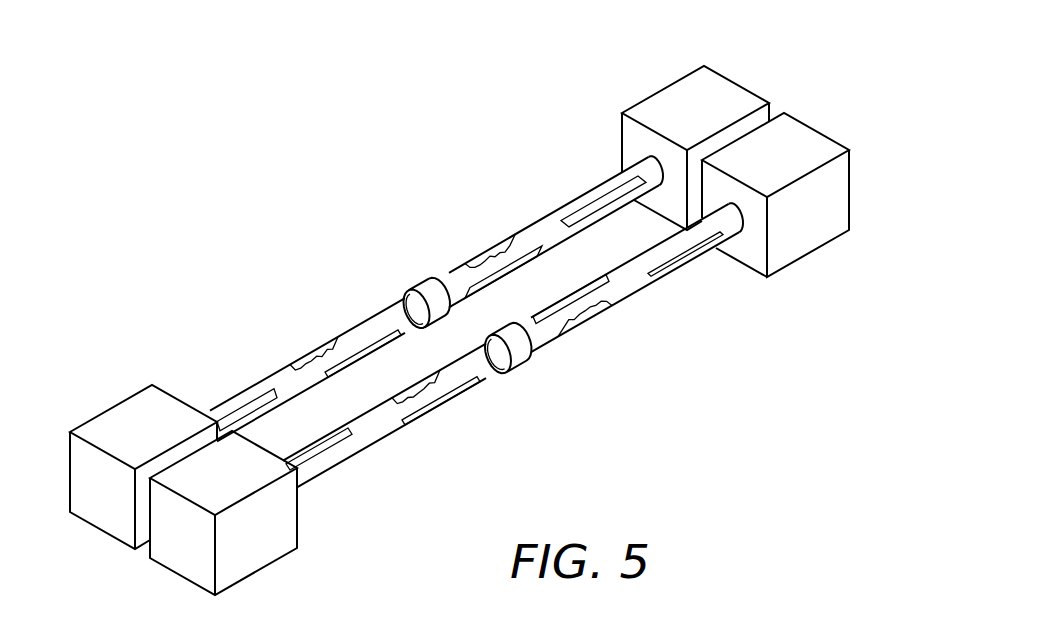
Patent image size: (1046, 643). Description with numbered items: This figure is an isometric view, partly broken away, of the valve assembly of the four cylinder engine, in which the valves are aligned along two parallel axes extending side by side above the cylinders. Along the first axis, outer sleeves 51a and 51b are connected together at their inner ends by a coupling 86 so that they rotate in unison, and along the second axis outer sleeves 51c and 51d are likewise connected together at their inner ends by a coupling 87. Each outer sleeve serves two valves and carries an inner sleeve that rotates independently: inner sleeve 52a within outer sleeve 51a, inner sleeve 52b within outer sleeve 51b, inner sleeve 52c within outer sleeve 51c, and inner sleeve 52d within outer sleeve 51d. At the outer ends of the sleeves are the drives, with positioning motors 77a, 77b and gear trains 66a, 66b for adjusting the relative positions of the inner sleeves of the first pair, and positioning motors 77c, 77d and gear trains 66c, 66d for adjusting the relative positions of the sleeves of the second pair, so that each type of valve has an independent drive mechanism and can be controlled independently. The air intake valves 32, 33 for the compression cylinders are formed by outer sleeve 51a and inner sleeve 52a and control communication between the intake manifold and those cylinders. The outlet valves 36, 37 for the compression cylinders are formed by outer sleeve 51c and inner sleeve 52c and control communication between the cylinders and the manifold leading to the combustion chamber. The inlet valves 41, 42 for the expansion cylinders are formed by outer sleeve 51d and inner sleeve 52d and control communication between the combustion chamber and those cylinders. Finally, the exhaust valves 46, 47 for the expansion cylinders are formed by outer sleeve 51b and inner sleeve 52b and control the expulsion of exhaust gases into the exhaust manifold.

The positioning motor 77a is at (116, 418).
The gear train 66a is at (153, 400).
The positioning motor 77b is at (667, 122).
The gear train 66b is at (697, 90).
The positioning motor 77c is at (285, 525).
The gear train 66c is at (248, 557).
The positioning motor 77d is at (805, 171).
The gear train 66d is at (767, 148).
The outer sleeve 51a is at (380, 320).
The outer sleeve 51b is at (528, 238).
The outer sleeve 51c is at (375, 427).
The outer sleeve 51d is at (655, 283).
The inner sleeve 52a is at (317, 355).
The inner sleeve 52b is at (497, 250).
The inner sleeve 52c is at (422, 383).
The inner sleeve 52d is at (602, 313).
The intake valve 32 is at (250, 403).
The intake valve 33 is at (337, 368).
The outlet valve 36 is at (333, 437).
The outlet valve 37 is at (447, 400).
The inlet valve 41 is at (553, 308).
The inlet valve 42 is at (695, 253).
The exhaust valve 46 is at (536, 250).
The exhaust valve 47 is at (605, 198).
The coupling 86 is at (425, 290).
The coupling 87 is at (520, 358).